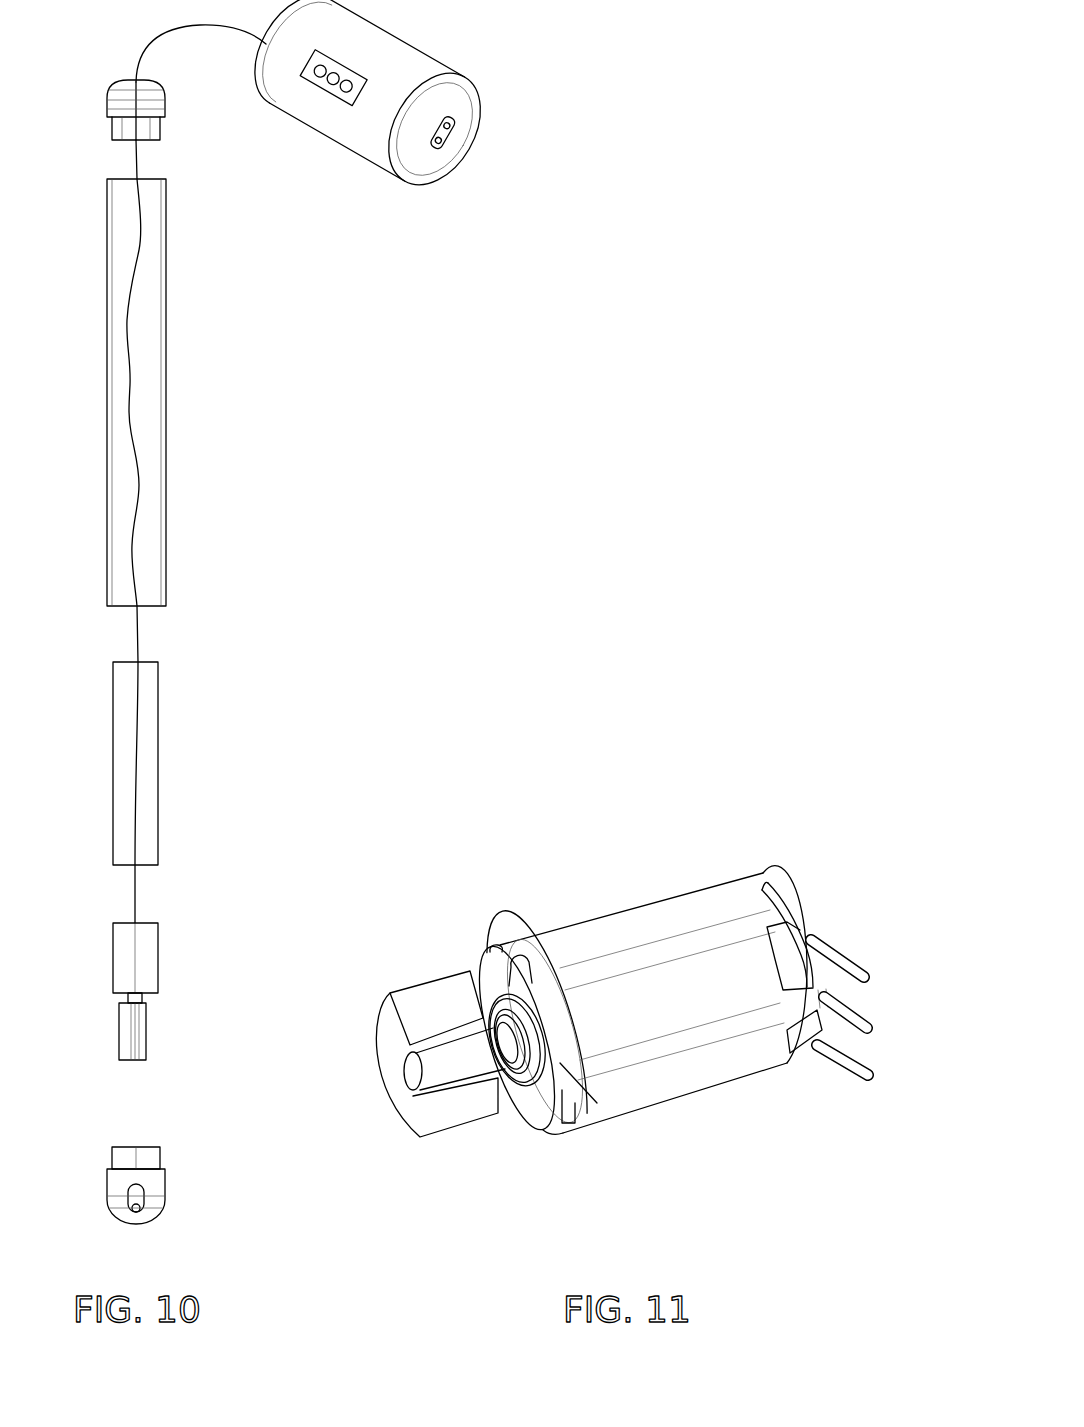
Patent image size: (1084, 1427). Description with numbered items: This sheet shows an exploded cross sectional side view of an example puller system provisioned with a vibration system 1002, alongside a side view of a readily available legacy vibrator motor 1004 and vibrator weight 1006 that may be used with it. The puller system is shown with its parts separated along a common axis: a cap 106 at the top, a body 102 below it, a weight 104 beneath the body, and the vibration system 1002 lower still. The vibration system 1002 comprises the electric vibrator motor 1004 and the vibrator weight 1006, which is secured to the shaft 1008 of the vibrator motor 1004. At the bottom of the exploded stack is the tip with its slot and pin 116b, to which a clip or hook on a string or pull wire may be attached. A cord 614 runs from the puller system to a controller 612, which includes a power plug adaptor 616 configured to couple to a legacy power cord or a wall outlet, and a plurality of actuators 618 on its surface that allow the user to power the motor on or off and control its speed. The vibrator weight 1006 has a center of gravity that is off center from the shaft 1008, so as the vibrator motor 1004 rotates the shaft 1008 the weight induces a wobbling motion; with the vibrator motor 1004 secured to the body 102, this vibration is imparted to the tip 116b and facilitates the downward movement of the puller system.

In FIG. 10, the body 102 is at (107, 395).
In FIG. 10, the weight 104 is at (113, 766).
In FIG. 10, the cap 106 is at (107, 101).
In FIG. 10, the slot and pin 116b is at (165, 1186).
In FIG. 10, the controller 612 is at (384, 100).
In FIG. 10, the cord 614 is at (177, 31).
In FIG. 10, the power plug adaptor 616 is at (442, 132).
In FIG. 10, the actuators 618 is at (333, 78).
In FIG. 10, the vibration system 1002 is at (113, 991).
In FIG. 11, the vibration system 1002 is at (622, 1001).
In FIG. 10, the vibrator motor 1004 is at (113, 962).
In FIG. 11, the vibrator motor 1004 is at (612, 915).
In FIG. 10, the vibrator weight 1006 is at (119, 1036).
In FIG. 11, the vibrator weight 1006 is at (425, 985).
In FIG. 10, the shaft 1008 is at (142, 996).
In FIG. 11, the shaft 1008 is at (527, 1112).